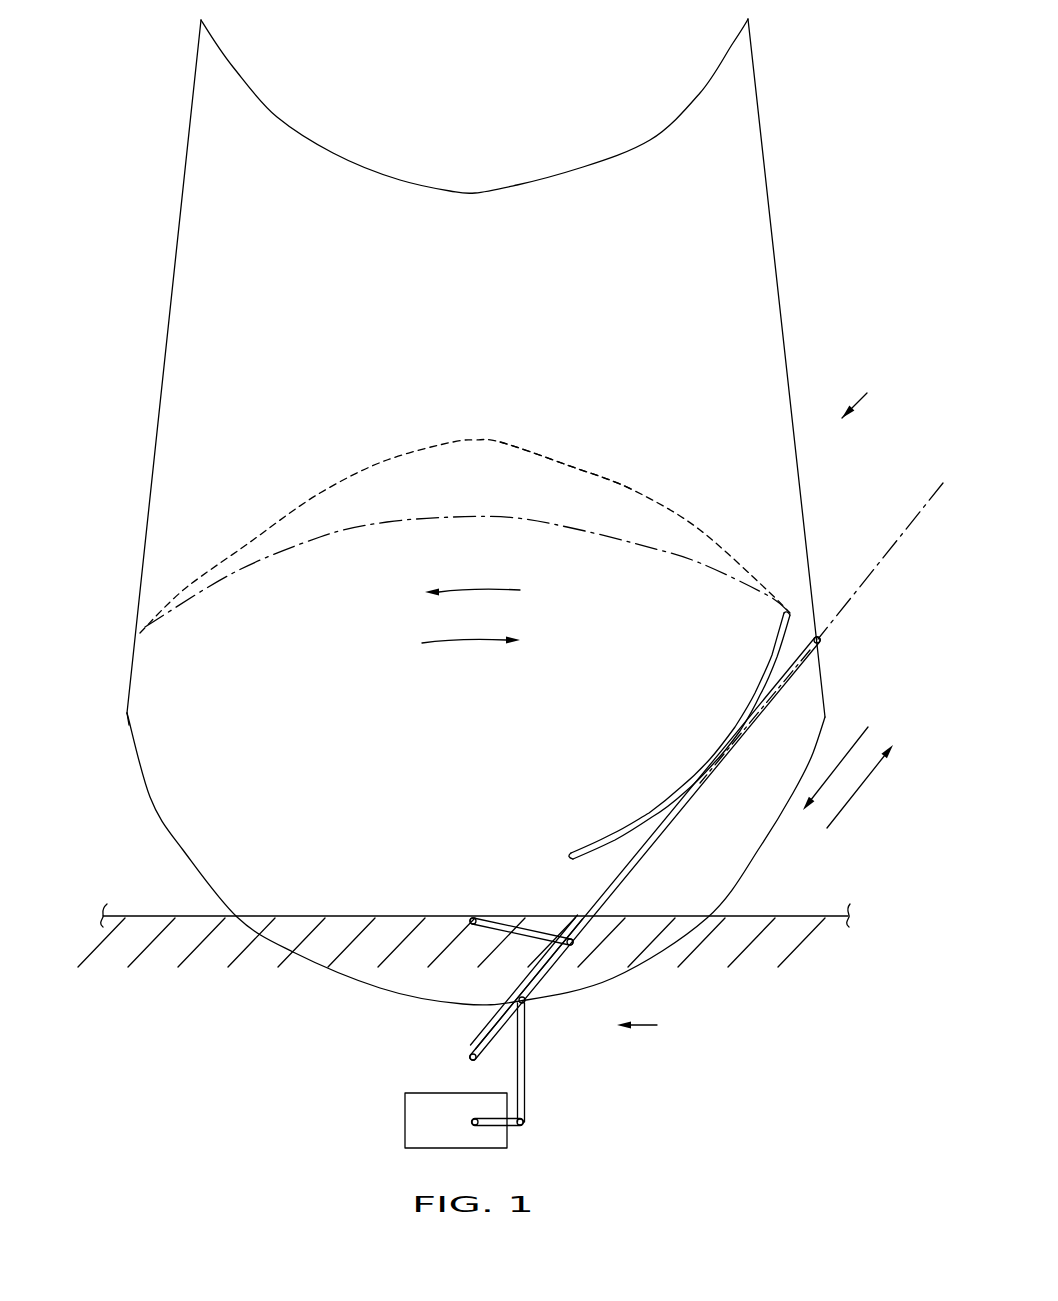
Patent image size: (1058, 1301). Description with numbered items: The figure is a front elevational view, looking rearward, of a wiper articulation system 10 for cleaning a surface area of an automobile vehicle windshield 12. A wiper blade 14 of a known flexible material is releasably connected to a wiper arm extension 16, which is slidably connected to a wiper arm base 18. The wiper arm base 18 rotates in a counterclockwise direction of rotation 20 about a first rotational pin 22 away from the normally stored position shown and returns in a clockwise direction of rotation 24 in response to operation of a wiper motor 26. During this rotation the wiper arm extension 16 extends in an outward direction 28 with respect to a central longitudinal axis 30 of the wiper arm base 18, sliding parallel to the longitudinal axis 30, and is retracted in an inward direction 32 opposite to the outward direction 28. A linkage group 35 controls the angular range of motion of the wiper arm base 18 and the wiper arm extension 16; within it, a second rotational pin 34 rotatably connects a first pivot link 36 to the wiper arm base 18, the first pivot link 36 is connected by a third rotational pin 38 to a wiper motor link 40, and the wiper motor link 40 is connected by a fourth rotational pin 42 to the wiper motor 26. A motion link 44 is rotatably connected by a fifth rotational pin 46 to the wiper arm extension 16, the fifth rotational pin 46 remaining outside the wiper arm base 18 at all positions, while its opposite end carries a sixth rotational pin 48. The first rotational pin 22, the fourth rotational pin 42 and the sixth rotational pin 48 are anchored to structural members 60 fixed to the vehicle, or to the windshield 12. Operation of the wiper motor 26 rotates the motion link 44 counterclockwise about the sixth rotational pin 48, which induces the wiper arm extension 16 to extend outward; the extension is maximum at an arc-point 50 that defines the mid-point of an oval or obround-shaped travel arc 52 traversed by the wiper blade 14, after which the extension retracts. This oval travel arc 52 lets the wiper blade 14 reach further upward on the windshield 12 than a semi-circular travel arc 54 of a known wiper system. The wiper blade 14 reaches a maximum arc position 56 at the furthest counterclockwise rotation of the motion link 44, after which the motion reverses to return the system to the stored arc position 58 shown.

The wiper articulation system 10 is at (867, 393).
The windshield 12 is at (752, 217).
The wiper blade 14 is at (776, 648).
The wiper arm extension 16 is at (689, 792).
The wiper arm base 18 is at (549, 977).
The counterclockwise direction of rotation 20 is at (474, 590).
The first rotational pin 22 is at (471, 1055).
The clockwise direction of rotation 24 is at (474, 643).
The wiper motor 26 is at (428, 1125).
The outward direction 28 is at (857, 793).
The central longitudinal axis 30 is at (906, 522).
The inward direction 32 is at (848, 750).
The second rotational pin 34 is at (526, 1003).
The linkage group 35 is at (657, 1025).
The first pivot link 36 is at (524, 1065).
The third rotational pin 38 is at (526, 1123).
The wiper motor link 40 is at (500, 1125).
The fourth rotational pin 42 is at (472, 1118).
The motion link 44 is at (537, 934).
The fifth rotational pin 46 is at (573, 945).
The sixth rotational pin 48 is at (471, 918).
The arc-point 50 is at (473, 439).
The travel arc 52 is at (537, 447).
The semi-circular travel arc 54 is at (232, 577).
The maximum arc position 56 is at (125, 714).
The arc position 58 is at (819, 643).
The structural members 60 is at (788, 916).